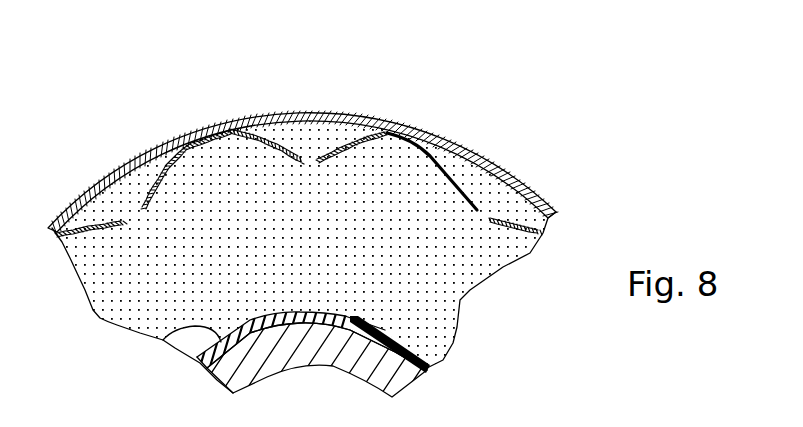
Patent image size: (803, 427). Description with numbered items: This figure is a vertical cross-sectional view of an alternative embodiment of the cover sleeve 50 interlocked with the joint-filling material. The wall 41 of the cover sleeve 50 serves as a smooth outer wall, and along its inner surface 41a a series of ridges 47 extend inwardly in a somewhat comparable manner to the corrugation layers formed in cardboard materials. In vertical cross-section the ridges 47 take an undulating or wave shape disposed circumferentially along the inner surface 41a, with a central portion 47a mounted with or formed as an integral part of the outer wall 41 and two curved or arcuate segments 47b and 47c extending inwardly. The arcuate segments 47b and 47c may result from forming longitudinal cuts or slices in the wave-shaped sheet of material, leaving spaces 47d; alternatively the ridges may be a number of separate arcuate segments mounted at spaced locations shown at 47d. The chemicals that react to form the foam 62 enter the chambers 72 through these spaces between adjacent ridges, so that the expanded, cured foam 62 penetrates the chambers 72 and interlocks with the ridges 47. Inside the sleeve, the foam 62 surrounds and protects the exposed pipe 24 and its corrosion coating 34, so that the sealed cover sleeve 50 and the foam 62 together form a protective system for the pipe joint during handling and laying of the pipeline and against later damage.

The cover sleeve 50 is at (188, 76).
The wall 41 is at (197, 130).
The inner surface 41a is at (143, 175).
The ridges 47 is at (273, 130).
The central portion 47a is at (212, 131).
The arcuate segment 47b is at (289, 160).
The arcuate segment 47c is at (335, 160).
The spaces 47d is at (308, 160).
The chambers 72 is at (124, 197).
The foam 62 is at (444, 280).
The corrosion coating 34 is at (163, 340).
The pipe 24 is at (388, 368).